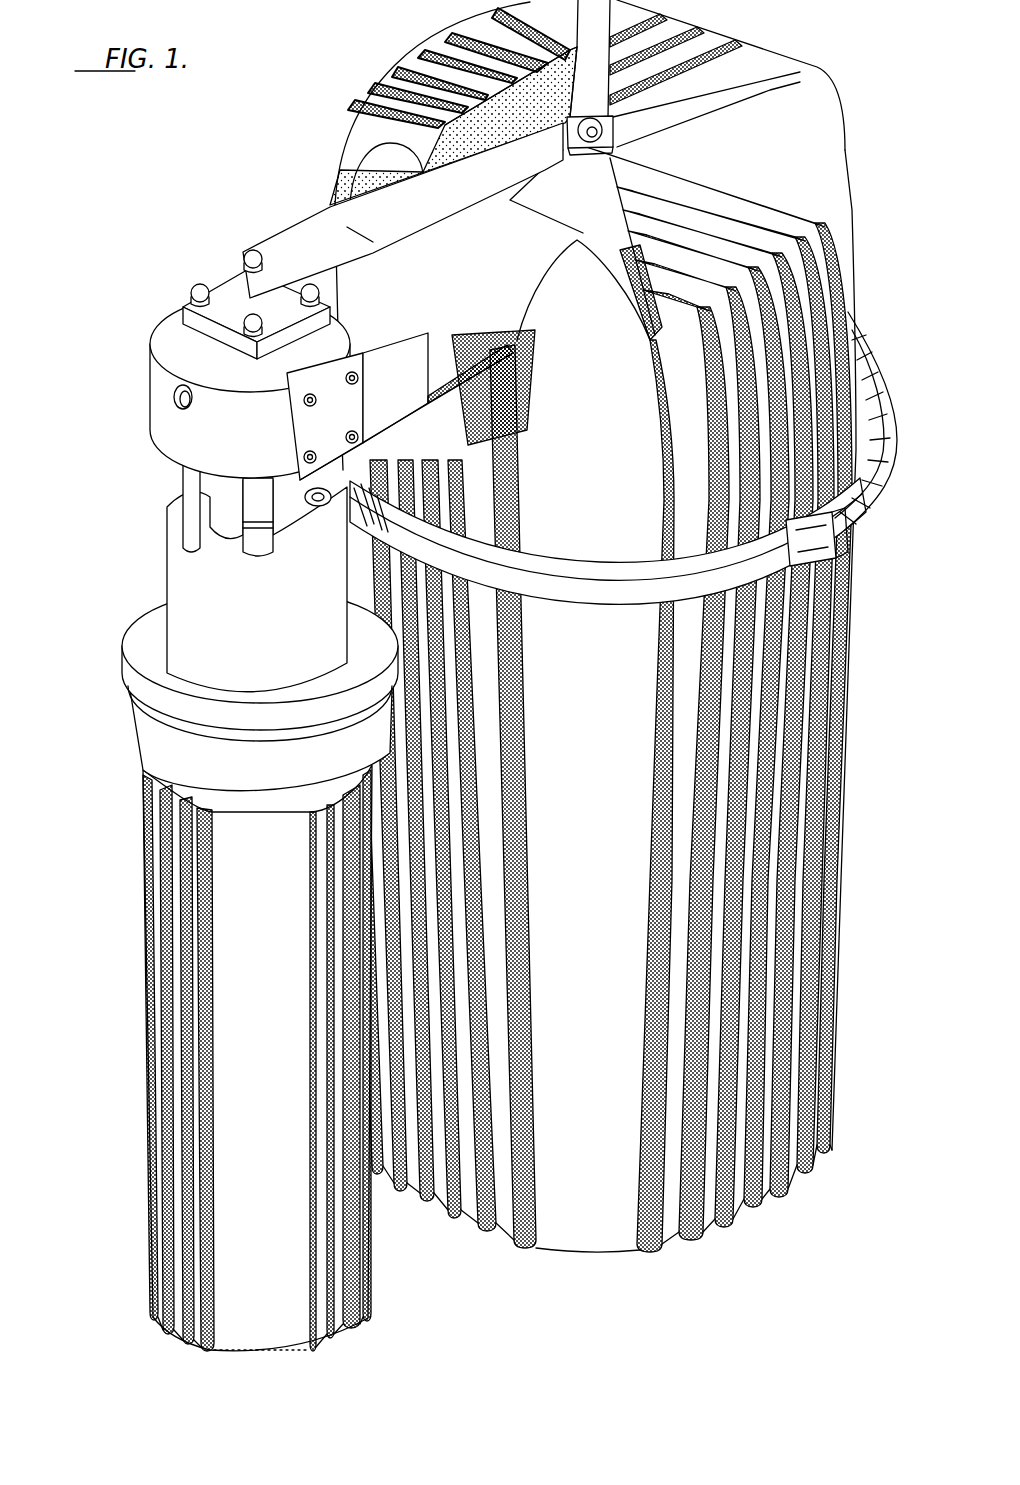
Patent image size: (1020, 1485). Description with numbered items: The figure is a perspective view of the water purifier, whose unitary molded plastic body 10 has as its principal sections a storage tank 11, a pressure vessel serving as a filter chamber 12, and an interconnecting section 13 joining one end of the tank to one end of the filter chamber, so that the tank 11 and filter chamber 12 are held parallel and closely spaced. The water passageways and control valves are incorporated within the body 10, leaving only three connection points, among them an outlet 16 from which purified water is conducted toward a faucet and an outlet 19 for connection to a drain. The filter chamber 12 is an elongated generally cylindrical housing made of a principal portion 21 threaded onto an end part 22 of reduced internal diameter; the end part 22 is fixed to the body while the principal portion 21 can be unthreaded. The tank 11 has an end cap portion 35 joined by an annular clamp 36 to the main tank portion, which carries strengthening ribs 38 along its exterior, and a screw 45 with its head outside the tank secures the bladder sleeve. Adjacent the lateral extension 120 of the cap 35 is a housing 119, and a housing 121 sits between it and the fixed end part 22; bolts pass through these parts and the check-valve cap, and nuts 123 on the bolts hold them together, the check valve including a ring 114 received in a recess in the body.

The unitary molded plastic body 10 is at (504, 675).
The storage tank 11 is at (628, 630).
The filter chamber 12 is at (248, 801).
The interconnecting section 13 is at (403, 301).
The outlet 16 is at (172, 402).
The outlet 19 is at (310, 490).
The principal portion 21 is at (152, 1125).
The end part 22 is at (168, 576).
The end cap portion 35 is at (840, 146).
The annular clamp 36 is at (870, 497).
The strengthening ribs 38 is at (820, 1010).
The screw 45 is at (588, 120).
The ring 114 is at (235, 284).
The housing 119 is at (165, 380).
The lateral extension 120 is at (327, 212).
The housing 121 is at (185, 478).
The nuts 123 is at (248, 256).